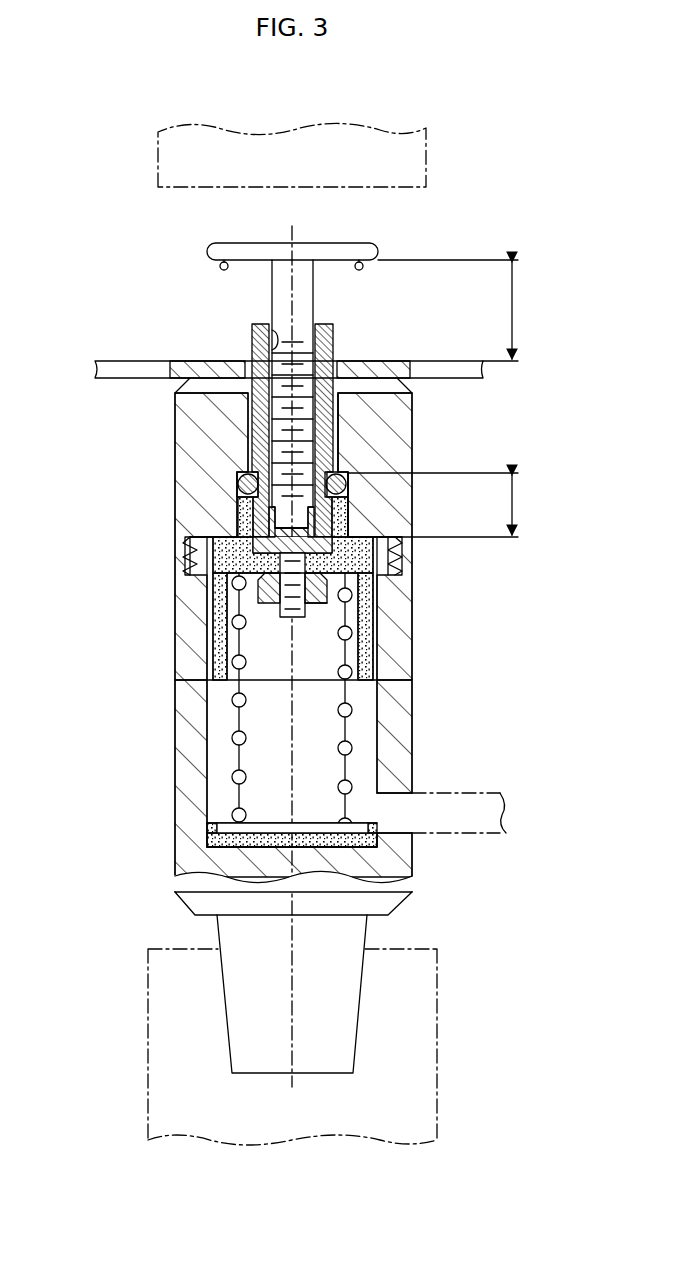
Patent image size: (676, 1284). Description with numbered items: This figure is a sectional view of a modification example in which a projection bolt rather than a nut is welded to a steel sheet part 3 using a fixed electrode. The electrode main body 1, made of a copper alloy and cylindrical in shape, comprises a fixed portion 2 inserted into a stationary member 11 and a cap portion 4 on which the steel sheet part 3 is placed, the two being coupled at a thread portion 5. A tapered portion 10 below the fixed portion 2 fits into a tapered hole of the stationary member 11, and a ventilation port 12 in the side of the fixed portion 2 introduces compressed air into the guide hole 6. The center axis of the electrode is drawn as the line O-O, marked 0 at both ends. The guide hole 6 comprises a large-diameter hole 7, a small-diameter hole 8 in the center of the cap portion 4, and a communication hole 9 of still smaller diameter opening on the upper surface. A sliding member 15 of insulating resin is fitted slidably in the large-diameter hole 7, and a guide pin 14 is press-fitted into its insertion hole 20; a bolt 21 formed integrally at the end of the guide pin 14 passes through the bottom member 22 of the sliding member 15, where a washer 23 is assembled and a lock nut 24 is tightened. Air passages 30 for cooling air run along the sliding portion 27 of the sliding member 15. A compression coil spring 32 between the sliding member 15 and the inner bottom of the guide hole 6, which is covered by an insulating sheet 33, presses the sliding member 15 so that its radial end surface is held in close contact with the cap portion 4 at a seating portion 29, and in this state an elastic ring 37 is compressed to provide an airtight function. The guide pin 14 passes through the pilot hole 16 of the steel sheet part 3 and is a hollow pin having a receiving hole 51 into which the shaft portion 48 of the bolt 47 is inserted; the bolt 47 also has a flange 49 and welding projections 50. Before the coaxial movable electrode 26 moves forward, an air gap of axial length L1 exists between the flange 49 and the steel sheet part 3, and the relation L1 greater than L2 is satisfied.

The center axis 0 is at (292, 659).
The electrode main body 1 is at (161, 701).
The fixed portion 2 is at (175, 847).
The steel sheet part 3 is at (118, 361).
The cap portion 4 is at (175, 421).
The thread portion 5 is at (395, 558).
The guide hole 6 is at (226, 793).
The large-diameter hole 7 is at (376, 735).
The small-diameter hole 8 is at (342, 507).
The communication hole 9 is at (332, 402).
The tapered portion 10 is at (357, 1045).
The stationary member 11 is at (439, 1046).
The ventilation port 12 is at (400, 810).
The guide pin 14 is at (333, 445).
The sliding member 15 is at (232, 554).
The pilot hole 16 is at (248, 352).
The insertion hole 20 is at (243, 512).
The bolt 21 is at (282, 616).
The bottom member 22 is at (260, 590).
The washer 23 is at (356, 575).
The lock nut 24 is at (312, 606).
The movable electrode 26 is at (428, 140).
The sliding portion 27 is at (222, 636).
The seating portion 29 is at (258, 538).
The air passages 30 is at (370, 648).
The compression coil spring 32 is at (232, 738).
The insulating sheet 33 is at (331, 848).
The elastic ring 37 is at (240, 476).
The bolt 47 is at (222, 240).
The shaft portion 48 is at (314, 305).
The flange 49 is at (336, 250).
The welding projections 50 is at (220, 265).
The receiving hole 51 is at (272, 338).
The axial length of air gap L1 is at (461, 310).
The axial length L2 is at (446, 505).